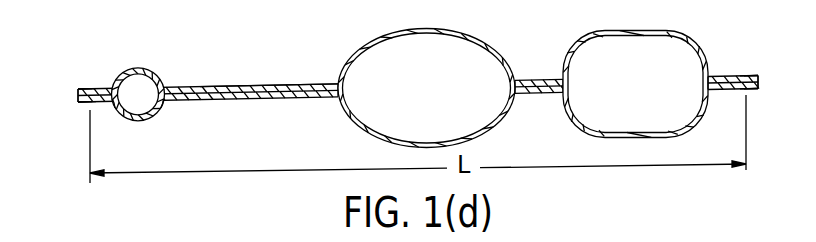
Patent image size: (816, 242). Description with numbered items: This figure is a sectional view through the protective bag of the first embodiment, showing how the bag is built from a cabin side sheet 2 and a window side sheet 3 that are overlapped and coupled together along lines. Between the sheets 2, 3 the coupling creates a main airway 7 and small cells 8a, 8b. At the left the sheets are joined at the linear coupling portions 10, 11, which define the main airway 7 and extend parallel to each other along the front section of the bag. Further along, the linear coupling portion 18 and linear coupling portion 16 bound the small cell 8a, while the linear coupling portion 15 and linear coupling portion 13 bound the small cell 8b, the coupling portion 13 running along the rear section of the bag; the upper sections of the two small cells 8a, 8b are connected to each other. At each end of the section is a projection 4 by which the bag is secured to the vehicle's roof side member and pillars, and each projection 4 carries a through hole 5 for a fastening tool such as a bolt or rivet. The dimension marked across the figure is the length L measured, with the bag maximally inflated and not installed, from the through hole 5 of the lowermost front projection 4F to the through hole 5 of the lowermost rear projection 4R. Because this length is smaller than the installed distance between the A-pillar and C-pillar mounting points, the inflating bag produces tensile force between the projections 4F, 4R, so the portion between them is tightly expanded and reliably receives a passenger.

The cabin side sheet 2 is at (271, 102).
The window side sheet 3 is at (265, 86).
The projection 4 is at (415, 57).
The lowermost projection of the front section 4F is at (78, 89).
The lowermost projection of the rear section 4R is at (754, 74).
The through hole 5 is at (88, 89).
The main airway 7 is at (143, 82).
The small cell 8a is at (438, 102).
The small cell 8b is at (650, 97).
The linear coupling portion 10 is at (113, 110).
The linear coupling portion 11 is at (163, 108).
The linear coupling portion 13 is at (708, 72).
The linear coupling portion 15 is at (565, 72).
The linear coupling portion 16 is at (517, 73).
The linear coupling portion 18 is at (338, 78).